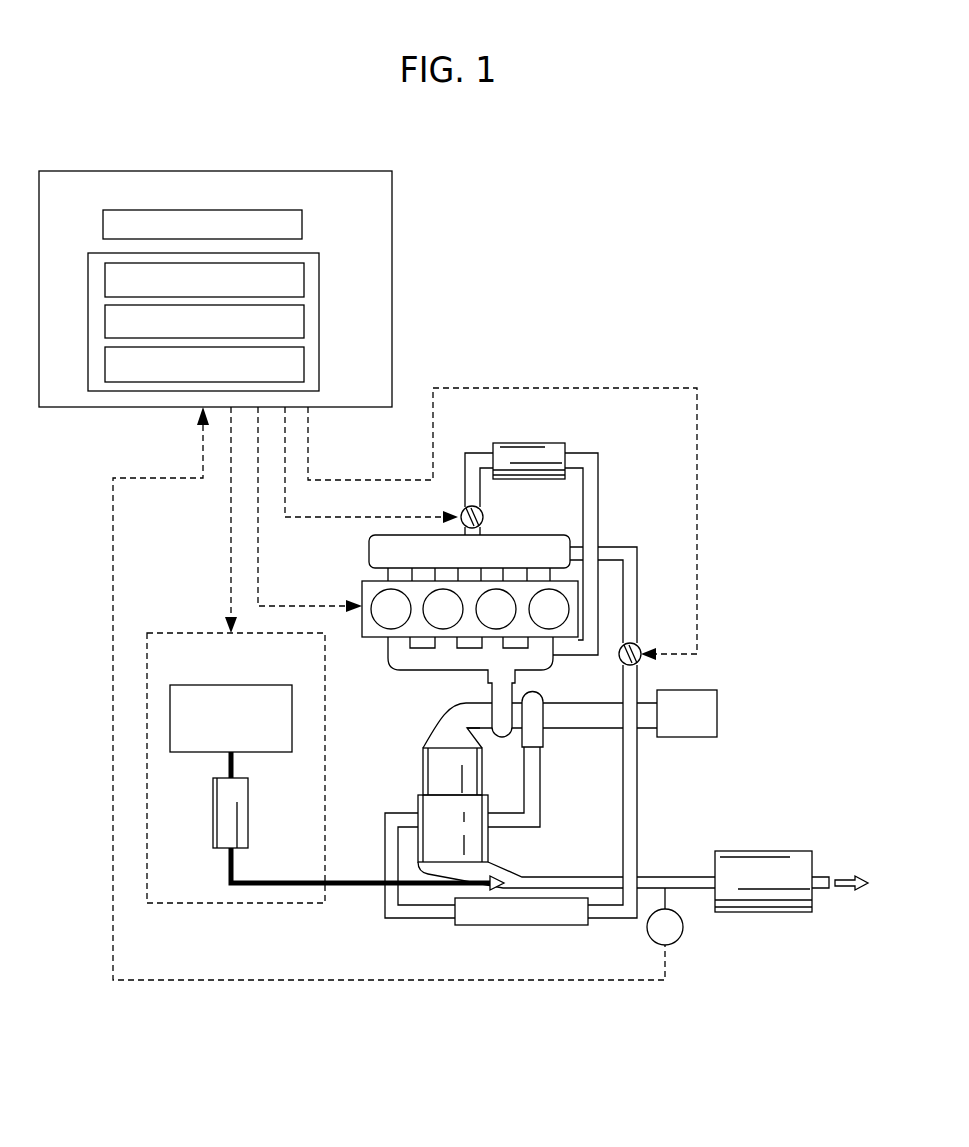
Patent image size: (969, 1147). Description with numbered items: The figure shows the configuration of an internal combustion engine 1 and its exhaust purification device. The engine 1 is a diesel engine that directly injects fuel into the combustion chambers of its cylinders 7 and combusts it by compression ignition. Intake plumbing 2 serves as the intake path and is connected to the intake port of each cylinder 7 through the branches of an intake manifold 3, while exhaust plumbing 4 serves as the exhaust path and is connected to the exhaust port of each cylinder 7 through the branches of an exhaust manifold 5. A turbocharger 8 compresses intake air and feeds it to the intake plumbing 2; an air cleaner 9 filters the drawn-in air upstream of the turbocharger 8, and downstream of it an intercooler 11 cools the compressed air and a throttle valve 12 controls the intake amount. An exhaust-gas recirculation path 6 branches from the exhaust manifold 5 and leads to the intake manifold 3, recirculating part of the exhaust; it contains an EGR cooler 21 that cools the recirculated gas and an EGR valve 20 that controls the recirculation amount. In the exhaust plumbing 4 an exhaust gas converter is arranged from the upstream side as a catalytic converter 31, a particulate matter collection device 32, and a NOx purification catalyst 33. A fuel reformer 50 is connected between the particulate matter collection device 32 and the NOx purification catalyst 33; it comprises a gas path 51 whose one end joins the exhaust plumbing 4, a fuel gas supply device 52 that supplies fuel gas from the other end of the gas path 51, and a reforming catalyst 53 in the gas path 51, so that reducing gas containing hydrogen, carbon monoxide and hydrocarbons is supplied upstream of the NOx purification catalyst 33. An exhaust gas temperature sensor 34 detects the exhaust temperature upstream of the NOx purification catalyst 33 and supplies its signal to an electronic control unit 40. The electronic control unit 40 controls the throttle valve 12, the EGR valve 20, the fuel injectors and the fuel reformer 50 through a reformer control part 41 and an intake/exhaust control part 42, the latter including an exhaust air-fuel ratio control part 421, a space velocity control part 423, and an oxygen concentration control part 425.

The internal combustion engine 1 is at (372, 580).
The intake plumbing 2 is at (541, 790).
The intake manifold 3 is at (537, 535).
The exhaust plumbing 4 is at (447, 716).
The exhaust manifold 5 is at (388, 655).
The exhaust-gas recirculation path 6 is at (600, 480).
The cylinder 7 is at (373, 624).
The turbocharger 8 is at (546, 688).
The air cleaner 9 is at (703, 690).
The intercooler 11 is at (520, 926).
The throttle valve 12 is at (641, 648).
The EGR valve 20 is at (483, 516).
The EGR cooler 21 is at (523, 443).
The catalytic converter 31 is at (423, 768).
The particulate matter collection device (DPF) 32 is at (418, 805).
The NOx purification catalyst 33 is at (744, 912).
The exhaust gas temperature sensor 34 is at (683, 932).
The electronic control unit (ECU) 40 is at (355, 170).
The reformer control part 41 is at (302, 226).
The intake/exhaust control part 42 is at (88, 282).
The exhaust air-fuel ratio control part 421 is at (304, 283).
The space velocity control part 423 is at (304, 324).
The oxygen concentration control part 425 is at (304, 363).
The fuel reformer 50 is at (168, 632).
The gas path 51 is at (268, 880).
The fuel gas supply device 52 is at (273, 752).
The reforming catalyst 53 is at (212, 817).